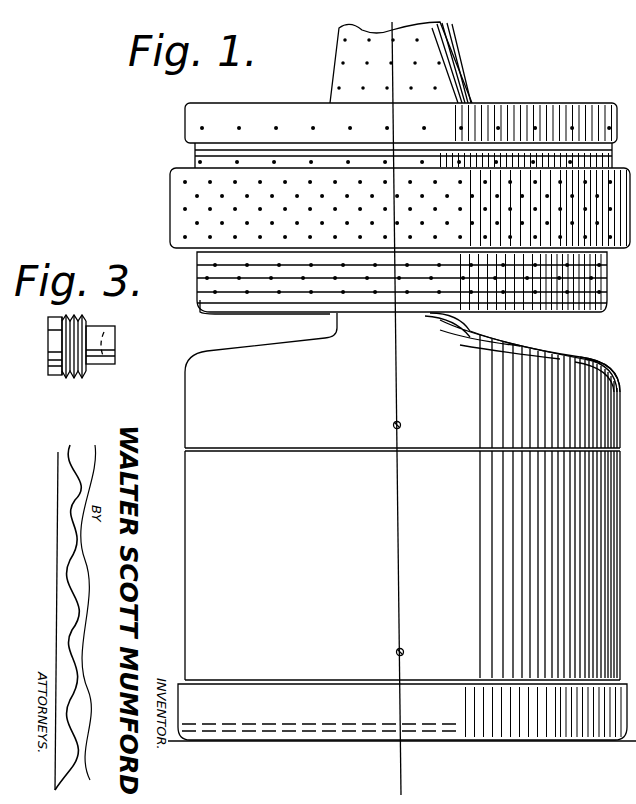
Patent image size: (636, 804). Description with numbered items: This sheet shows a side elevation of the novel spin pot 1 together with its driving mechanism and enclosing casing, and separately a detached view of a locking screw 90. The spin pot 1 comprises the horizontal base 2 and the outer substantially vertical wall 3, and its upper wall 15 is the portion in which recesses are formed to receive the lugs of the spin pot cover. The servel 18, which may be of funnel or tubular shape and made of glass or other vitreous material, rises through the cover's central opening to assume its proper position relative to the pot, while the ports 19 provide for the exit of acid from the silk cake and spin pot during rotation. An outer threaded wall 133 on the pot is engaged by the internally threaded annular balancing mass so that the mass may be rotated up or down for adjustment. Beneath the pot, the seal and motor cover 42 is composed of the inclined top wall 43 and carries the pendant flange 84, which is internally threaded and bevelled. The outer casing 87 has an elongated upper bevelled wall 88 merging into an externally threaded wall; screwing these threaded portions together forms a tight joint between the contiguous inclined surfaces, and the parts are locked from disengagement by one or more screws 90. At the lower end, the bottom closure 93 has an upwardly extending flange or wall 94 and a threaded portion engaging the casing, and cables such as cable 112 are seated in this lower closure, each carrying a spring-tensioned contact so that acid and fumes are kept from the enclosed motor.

In FIG. 1, the spin pot 1 is at (403, 217).
In FIG. 1, the horizontal base 2 is at (390, 404).
In FIG. 1, the outer substantially vertical wall 3 is at (412, 282).
In FIG. 1, the upper wall 15 is at (190, 108).
In FIG. 1, the servel 18 is at (334, 72).
In FIG. 1, the ports 19 is at (185, 178).
In FIG. 1, the motor cover 42 is at (580, 326).
In FIG. 1, the inclined top wall 43 is at (566, 364).
In FIG. 1, the pendant flange 84 is at (402, 380).
In FIG. 1, the outer casing 87 is at (402, 565).
In FIG. 1, the upper bevelled wall 88 is at (323, 452).
In FIG. 1, the screw 90 is at (401, 423).
In FIG. 3, the screw 90 is at (81, 356).
In FIG. 1, the bottom closure 93 is at (515, 741).
In FIG. 1, the upwardly extending flange 94 is at (373, 705).
In FIG. 1, the cable 112 is at (238, 732).
In FIG. 1, the outer threaded wall 133 is at (200, 300).